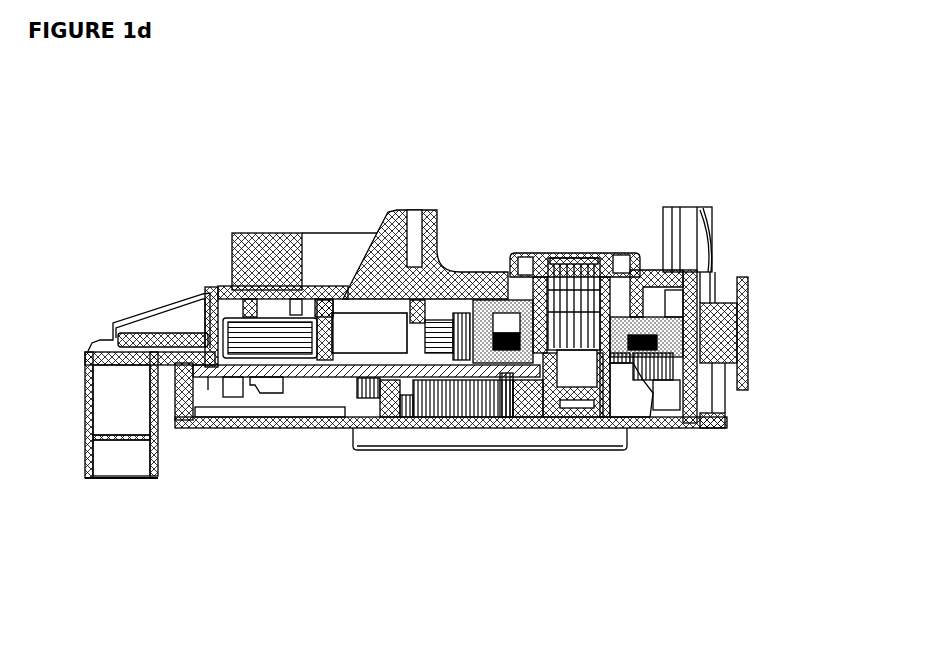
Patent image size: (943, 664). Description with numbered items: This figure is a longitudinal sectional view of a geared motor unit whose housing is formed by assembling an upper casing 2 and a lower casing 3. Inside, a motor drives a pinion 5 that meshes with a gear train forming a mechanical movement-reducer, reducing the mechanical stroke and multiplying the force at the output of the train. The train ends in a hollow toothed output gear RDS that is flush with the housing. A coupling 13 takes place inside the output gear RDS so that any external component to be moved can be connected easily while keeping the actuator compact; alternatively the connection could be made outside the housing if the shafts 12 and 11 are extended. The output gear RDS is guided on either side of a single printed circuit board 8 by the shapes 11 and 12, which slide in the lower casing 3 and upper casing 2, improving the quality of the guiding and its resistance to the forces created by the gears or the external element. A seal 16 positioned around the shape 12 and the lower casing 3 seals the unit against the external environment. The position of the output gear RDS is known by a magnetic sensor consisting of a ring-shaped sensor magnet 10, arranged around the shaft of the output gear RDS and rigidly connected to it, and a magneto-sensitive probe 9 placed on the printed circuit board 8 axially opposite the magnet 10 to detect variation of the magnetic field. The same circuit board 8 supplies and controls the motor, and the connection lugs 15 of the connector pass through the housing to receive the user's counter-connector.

The upper casing 2 is at (218, 425).
The lower casing 3 is at (220, 285).
The pinion 5 is at (375, 395).
The printed circuit board 8 is at (306, 410).
The magneto-sensitive probe 9 is at (538, 400).
The sensor magnet 10 is at (677, 344).
The guide shape 11 is at (602, 398).
The guide shape 12 is at (497, 272).
The coupling 13 is at (597, 277).
The connection lugs 15 is at (120, 397).
The seal 16 is at (621, 268).
The toothed output gear RDS is at (483, 318).